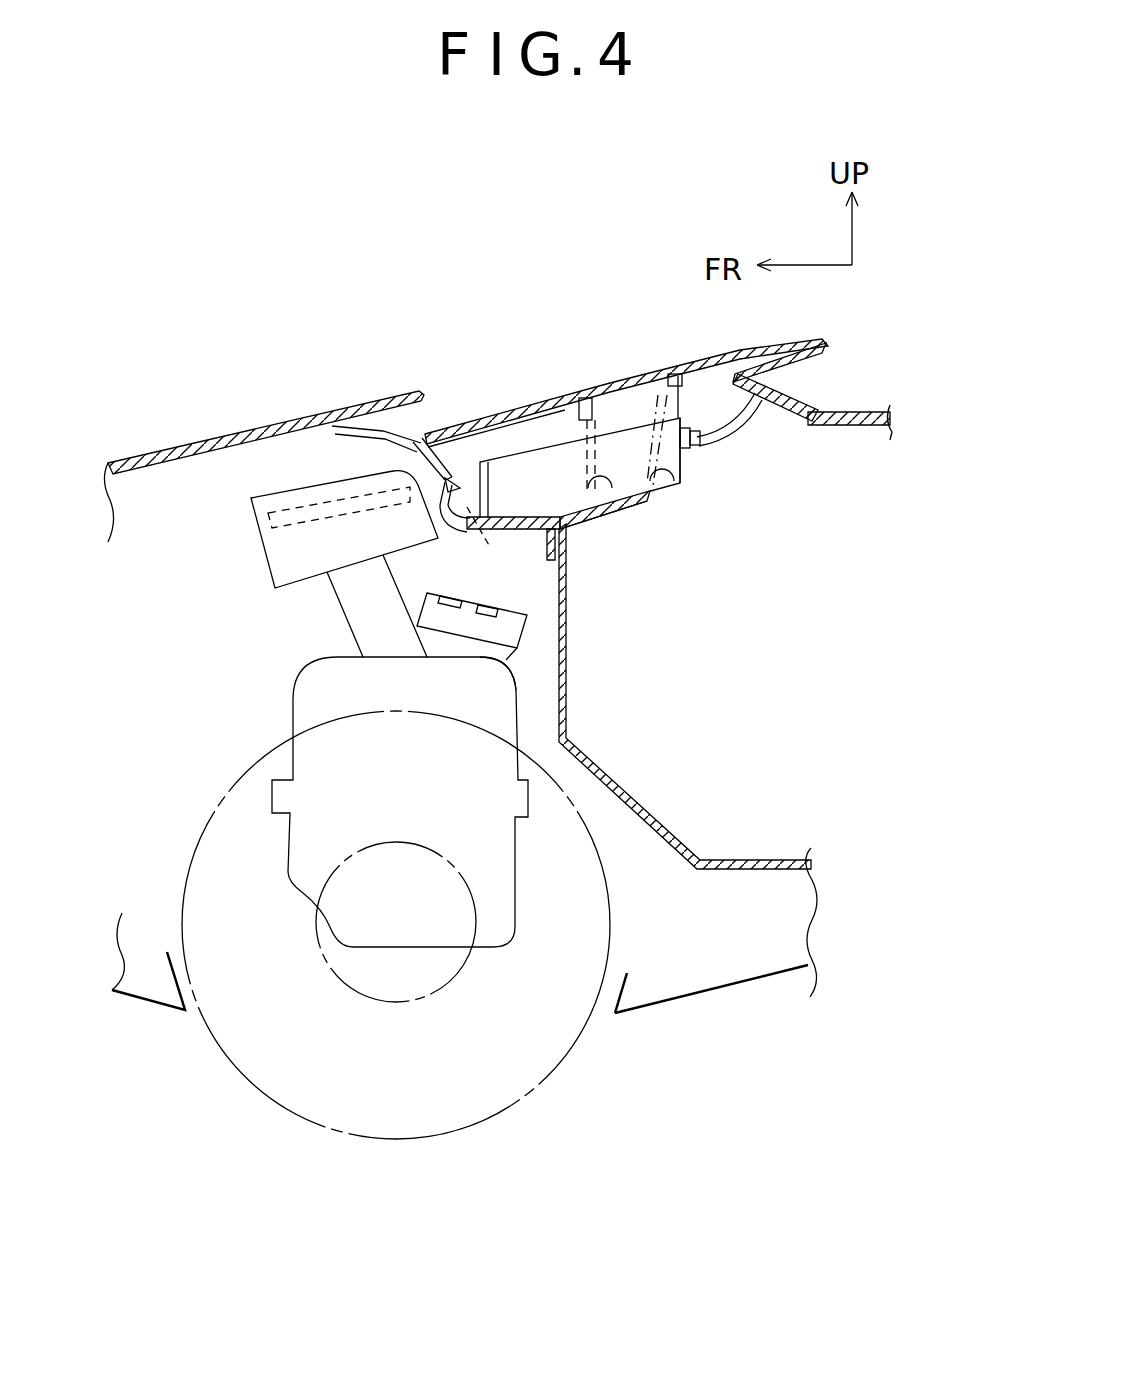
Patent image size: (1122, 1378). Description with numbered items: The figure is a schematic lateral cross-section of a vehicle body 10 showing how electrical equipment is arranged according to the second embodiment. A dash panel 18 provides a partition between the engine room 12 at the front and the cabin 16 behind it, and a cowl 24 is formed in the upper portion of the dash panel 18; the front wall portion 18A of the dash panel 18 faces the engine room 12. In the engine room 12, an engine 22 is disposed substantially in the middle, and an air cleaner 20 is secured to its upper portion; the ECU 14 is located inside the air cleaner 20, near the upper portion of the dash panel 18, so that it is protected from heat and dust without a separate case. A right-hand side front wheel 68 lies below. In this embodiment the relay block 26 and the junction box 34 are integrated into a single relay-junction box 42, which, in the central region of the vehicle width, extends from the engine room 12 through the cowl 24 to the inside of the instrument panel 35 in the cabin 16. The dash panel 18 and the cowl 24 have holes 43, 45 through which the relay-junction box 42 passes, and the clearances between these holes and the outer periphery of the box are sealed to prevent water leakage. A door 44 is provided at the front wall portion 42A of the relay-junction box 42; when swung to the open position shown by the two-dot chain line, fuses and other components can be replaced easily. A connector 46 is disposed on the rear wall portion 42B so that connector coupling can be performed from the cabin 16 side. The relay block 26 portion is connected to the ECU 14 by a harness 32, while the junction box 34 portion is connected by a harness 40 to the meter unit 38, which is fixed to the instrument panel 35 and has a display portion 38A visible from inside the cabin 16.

The vehicle body 10 is at (397, 387).
The engine room 12 is at (160, 653).
The ECU 14 is at (268, 514).
The cabin 16 is at (770, 657).
The dash panel 18 is at (574, 689).
The front wall portion of the dash panel 18A is at (514, 688).
The air cleaner 20 is at (272, 583).
The engine 22 is at (290, 712).
The cowl 24 is at (630, 542).
The relay block 26 is at (538, 437).
The harness 32 is at (452, 503).
The junction box 34 is at (628, 457).
The instrument panel 35 is at (801, 338).
The meter unit 38 is at (847, 428).
The display portion 38A is at (812, 400).
The harness 40 is at (757, 400).
The relay-junction box 42 is at (655, 314).
The front wall portion of the relay-junction box 42A is at (455, 486).
The rear wall portion of the relay-junction box 42B is at (683, 470).
The hole 43 is at (604, 500).
The door 44 is at (470, 527).
The hole 45 is at (643, 520).
The connector 46 is at (695, 448).
The right-hand side front wheel 68 is at (613, 937).